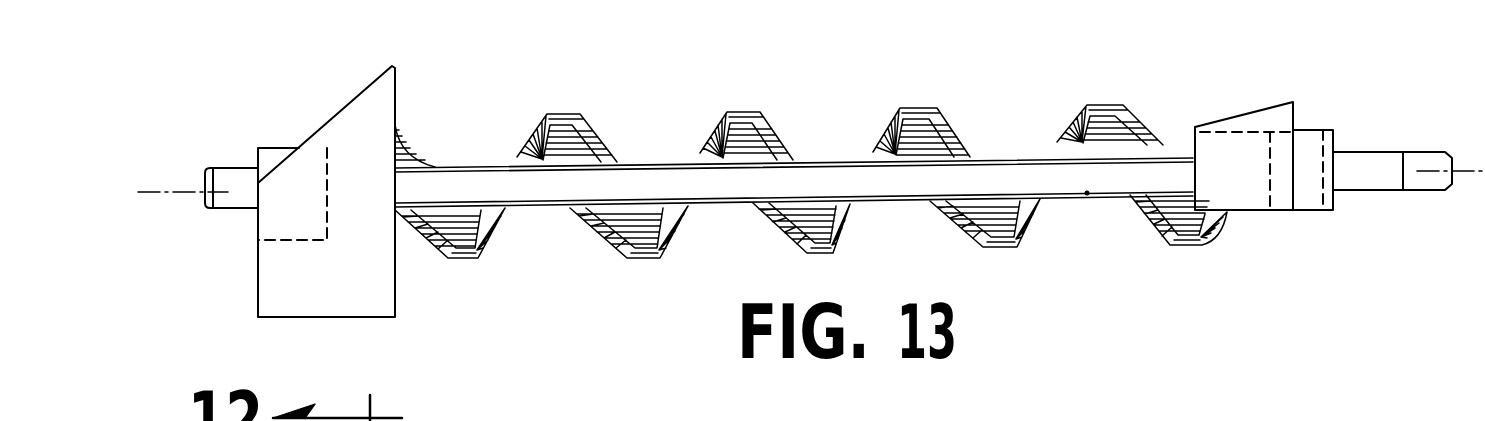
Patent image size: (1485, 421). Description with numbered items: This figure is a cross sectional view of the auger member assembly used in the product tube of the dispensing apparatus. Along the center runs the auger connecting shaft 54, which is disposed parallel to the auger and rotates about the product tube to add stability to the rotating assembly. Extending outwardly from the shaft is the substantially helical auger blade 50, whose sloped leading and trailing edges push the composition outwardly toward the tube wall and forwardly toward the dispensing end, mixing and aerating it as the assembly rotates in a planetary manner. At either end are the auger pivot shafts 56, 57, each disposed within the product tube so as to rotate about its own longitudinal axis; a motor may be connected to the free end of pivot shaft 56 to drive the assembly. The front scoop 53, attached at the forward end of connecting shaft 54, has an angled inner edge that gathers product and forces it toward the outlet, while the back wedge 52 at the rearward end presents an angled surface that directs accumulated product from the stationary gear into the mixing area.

The auger blade 50 is at (622, 252).
The back wedge 52 is at (1255, 108).
The front scoop 53 is at (395, 275).
The auger connecting shaft 54 is at (1087, 195).
The auger pivot shaft 56 is at (1355, 150).
The auger pivot shaft 57 is at (237, 167).